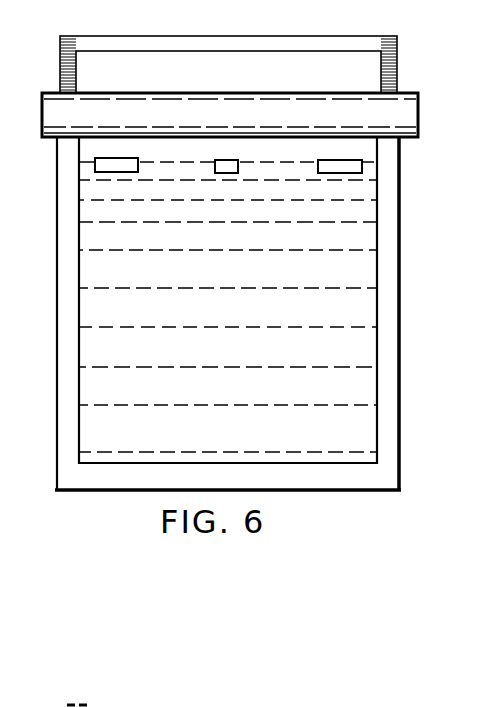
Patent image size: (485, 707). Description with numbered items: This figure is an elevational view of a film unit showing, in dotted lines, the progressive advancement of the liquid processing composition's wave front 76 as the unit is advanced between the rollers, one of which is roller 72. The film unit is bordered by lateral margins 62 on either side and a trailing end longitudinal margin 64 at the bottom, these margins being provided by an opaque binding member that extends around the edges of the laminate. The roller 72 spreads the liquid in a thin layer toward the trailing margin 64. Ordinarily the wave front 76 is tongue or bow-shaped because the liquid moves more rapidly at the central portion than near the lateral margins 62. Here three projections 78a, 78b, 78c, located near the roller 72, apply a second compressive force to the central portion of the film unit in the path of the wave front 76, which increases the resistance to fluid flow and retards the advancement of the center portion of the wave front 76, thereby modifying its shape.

The cylindrical roller 72 is at (391, 114).
The lateral margins 62 is at (70, 283).
The trailing end longitudinal margin 64 is at (375, 481).
The wave front 76 is at (137, 365).
The projection 78a is at (336, 158).
The projection 78b is at (222, 158).
The projection 78c is at (133, 158).